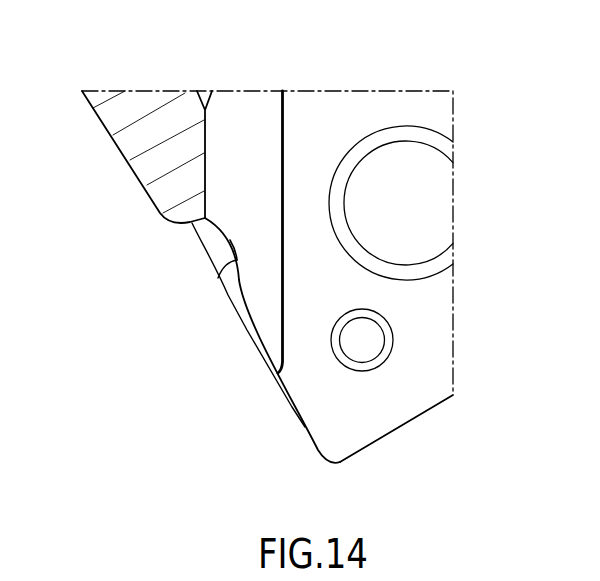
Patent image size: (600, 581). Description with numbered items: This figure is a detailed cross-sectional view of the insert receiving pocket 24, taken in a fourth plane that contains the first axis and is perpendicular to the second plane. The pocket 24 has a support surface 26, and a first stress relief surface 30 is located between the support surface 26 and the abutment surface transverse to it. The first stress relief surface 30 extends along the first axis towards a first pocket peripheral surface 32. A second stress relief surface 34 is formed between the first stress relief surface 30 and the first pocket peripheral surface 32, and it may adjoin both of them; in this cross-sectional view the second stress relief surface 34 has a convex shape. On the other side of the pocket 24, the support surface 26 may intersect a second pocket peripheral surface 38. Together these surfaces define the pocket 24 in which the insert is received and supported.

The pocket 24 is at (317, 120).
The support surface 26 is at (420, 357).
The first stress relief surface 30 is at (260, 250).
The first pocket peripheral surface 32 is at (290, 412).
The second stress relief surface 34 is at (187, 223).
The second pocket peripheral surface 38 is at (383, 442).